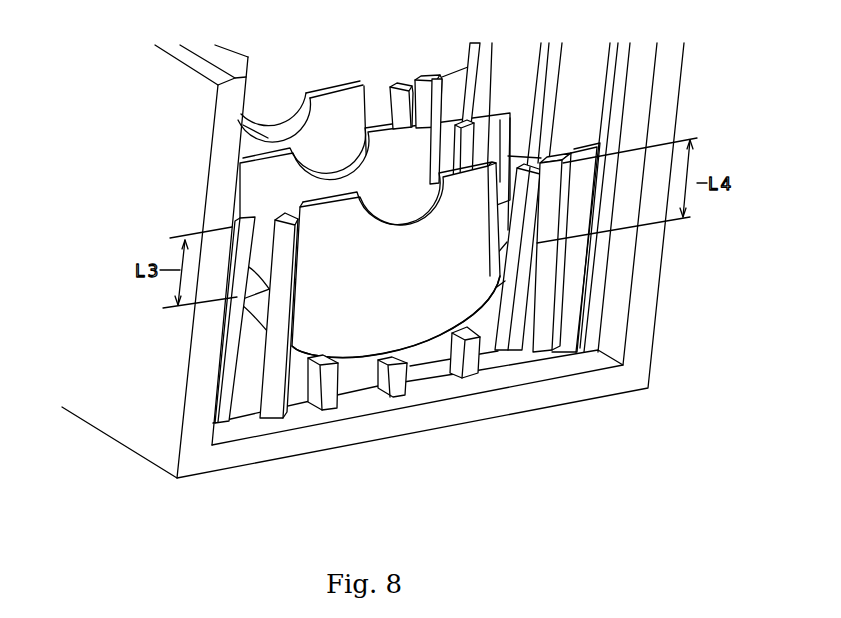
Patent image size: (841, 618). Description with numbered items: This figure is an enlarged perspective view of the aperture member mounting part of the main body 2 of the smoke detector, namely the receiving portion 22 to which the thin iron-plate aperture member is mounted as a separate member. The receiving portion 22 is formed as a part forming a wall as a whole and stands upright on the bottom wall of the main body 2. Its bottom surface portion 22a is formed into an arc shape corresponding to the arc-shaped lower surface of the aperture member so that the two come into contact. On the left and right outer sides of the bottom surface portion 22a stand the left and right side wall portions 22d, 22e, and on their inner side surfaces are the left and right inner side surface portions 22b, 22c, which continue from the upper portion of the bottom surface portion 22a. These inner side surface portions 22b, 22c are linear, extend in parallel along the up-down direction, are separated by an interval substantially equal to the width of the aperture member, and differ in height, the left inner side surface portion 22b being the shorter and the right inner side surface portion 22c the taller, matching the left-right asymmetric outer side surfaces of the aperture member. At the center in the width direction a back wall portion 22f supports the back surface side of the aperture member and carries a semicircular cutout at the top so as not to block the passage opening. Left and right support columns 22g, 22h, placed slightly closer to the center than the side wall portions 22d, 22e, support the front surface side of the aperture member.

The main body 2 is at (636, 390).
The receiving portion 22 is at (418, 403).
The bottom surface portion 22a is at (430, 345).
The left inner side surface portion 22b is at (256, 262).
The right inner side surface portion 22c is at (553, 260).
The left side wall portion 22d is at (227, 360).
The right side wall portion 22e is at (557, 289).
The back wall portion 22f is at (357, 318).
The left support column 22g is at (296, 345).
The right support column 22h is at (552, 217).